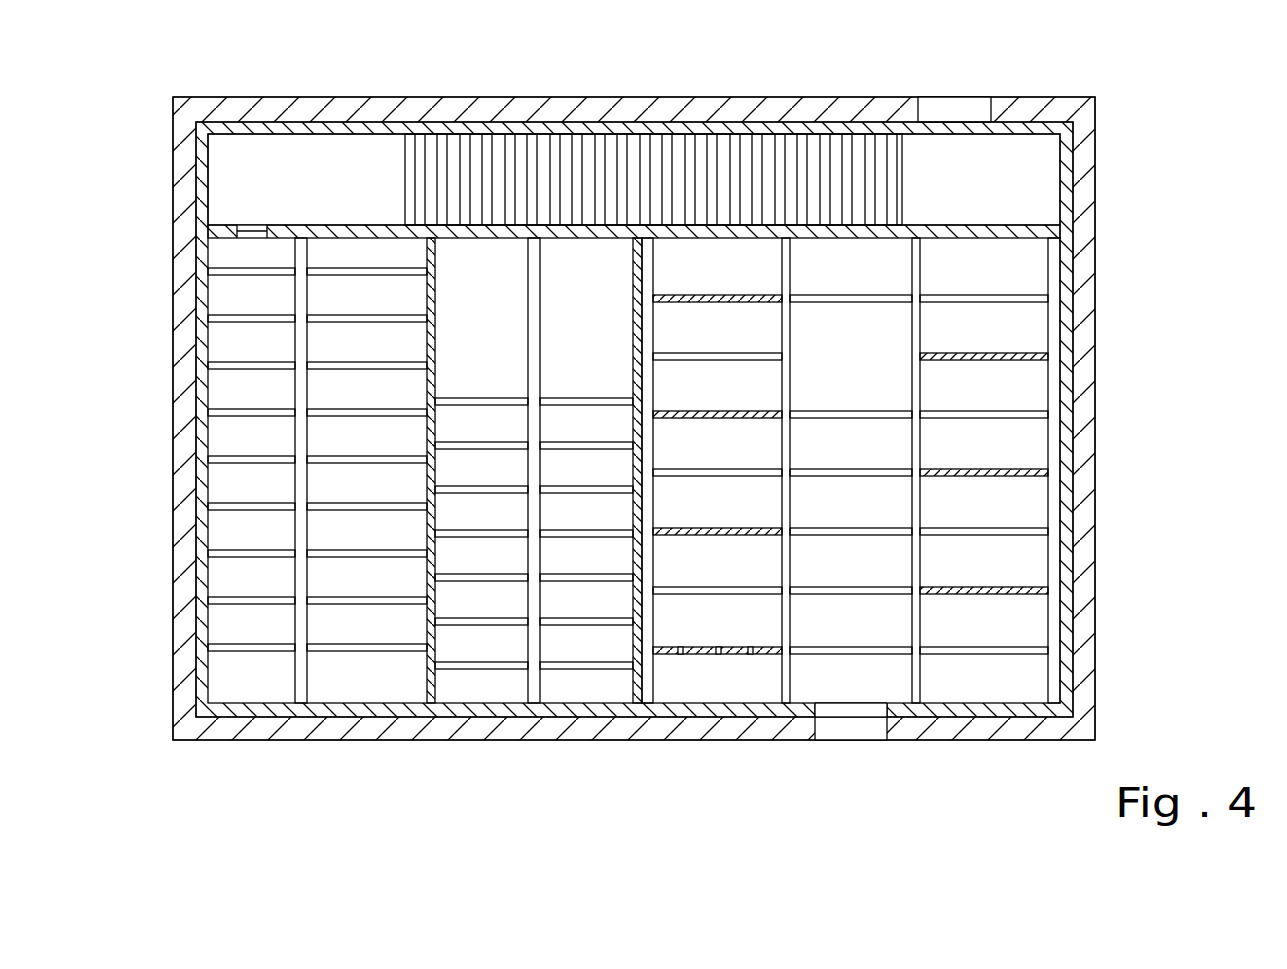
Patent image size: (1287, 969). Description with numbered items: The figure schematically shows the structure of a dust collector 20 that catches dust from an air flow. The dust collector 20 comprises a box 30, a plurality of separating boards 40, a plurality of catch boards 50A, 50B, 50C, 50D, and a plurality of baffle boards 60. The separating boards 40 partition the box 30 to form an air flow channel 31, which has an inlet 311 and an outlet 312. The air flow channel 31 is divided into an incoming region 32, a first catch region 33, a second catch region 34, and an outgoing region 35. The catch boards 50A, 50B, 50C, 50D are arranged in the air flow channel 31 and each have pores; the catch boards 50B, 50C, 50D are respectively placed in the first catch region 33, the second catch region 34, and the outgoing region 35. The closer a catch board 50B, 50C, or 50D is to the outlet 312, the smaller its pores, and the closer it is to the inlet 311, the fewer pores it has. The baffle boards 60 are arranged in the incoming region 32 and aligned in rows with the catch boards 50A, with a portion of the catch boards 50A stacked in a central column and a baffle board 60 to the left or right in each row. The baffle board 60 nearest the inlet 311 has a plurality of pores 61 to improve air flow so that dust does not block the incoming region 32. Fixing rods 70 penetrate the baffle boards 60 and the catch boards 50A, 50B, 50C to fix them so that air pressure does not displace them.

The dust collector 20 is at (166, 91).
The box 30 is at (1082, 110).
The air flow channel 31 is at (1033, 165).
The inlet 311 is at (877, 733).
The outlet 312 is at (957, 108).
The incoming region 32 is at (902, 524).
The first catch region 33 is at (533, 600).
The second catch region 34 is at (312, 535).
The outgoing region 35 is at (1103, 130).
The separating board 40 is at (372, 230).
The catch board 50A is at (818, 587).
The catch board 50B is at (534, 648).
The catch board 50C is at (322, 648).
The catch board 50D is at (793, 152).
The baffle board 60 is at (850, 472).
The pores 61 is at (717, 672).
The fixing rod 70 is at (303, 296).